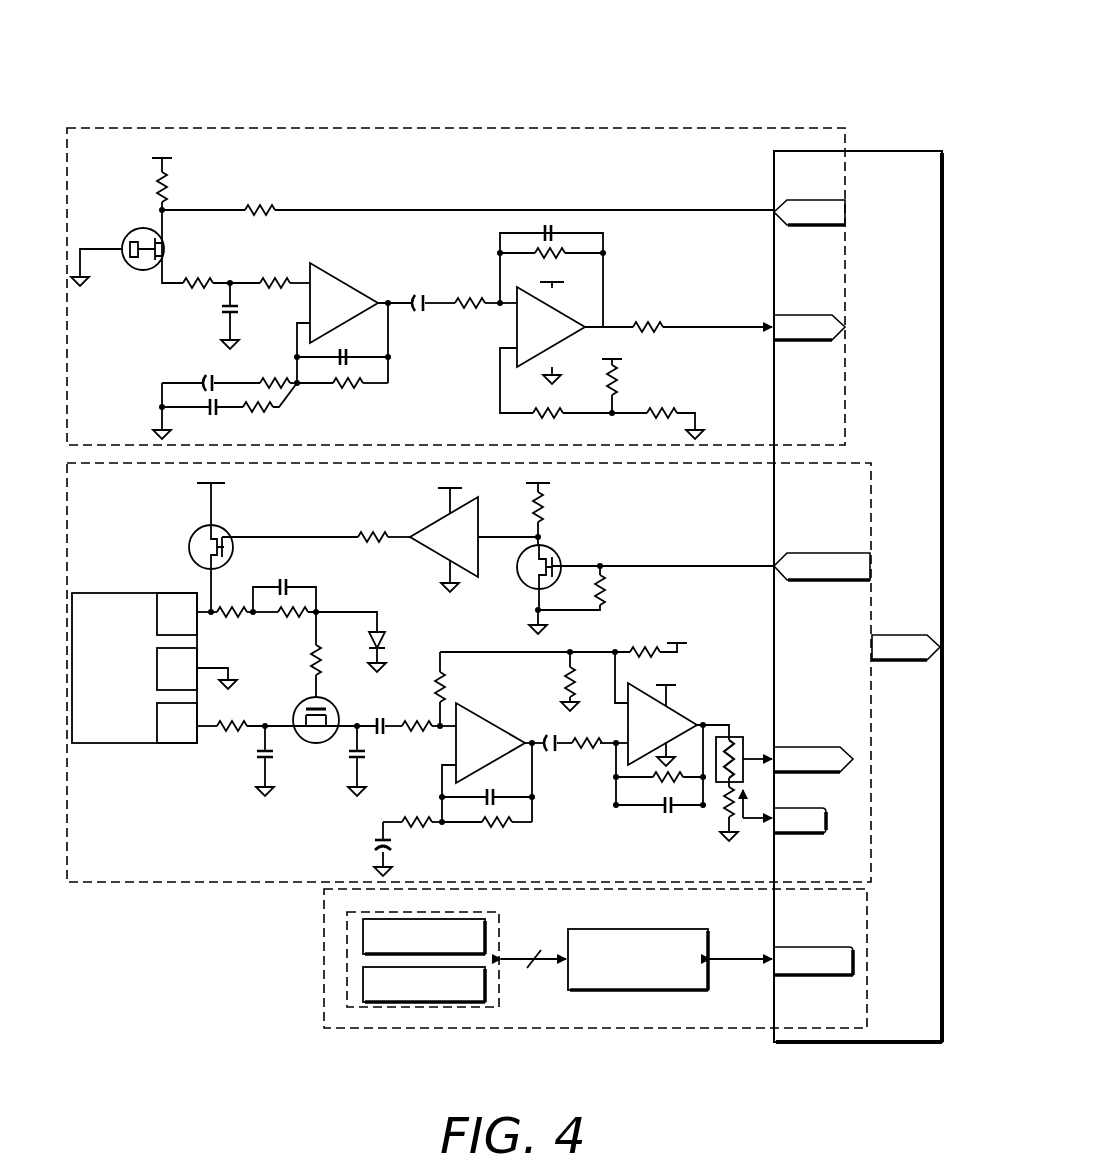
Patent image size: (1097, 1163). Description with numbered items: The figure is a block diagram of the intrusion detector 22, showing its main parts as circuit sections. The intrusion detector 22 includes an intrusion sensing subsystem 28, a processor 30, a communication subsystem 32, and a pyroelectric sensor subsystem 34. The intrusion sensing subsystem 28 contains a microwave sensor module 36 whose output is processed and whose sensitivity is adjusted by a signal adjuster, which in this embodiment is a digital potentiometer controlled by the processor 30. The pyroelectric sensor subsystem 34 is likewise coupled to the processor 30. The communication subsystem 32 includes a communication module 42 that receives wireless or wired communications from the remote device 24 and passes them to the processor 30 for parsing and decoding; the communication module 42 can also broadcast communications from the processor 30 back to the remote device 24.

The intrusion detector 22 is at (125, 55).
The remote device 24 is at (500, 918).
The intrusion sensing subsystem 28 is at (67, 882).
The processor 30 is at (883, 151).
The communication subsystem 32 is at (324, 1029).
The pyroelectric sensor subsystem 34 is at (67, 128).
The microwave sensor module 36 is at (135, 744).
The communication module 42 is at (687, 928).